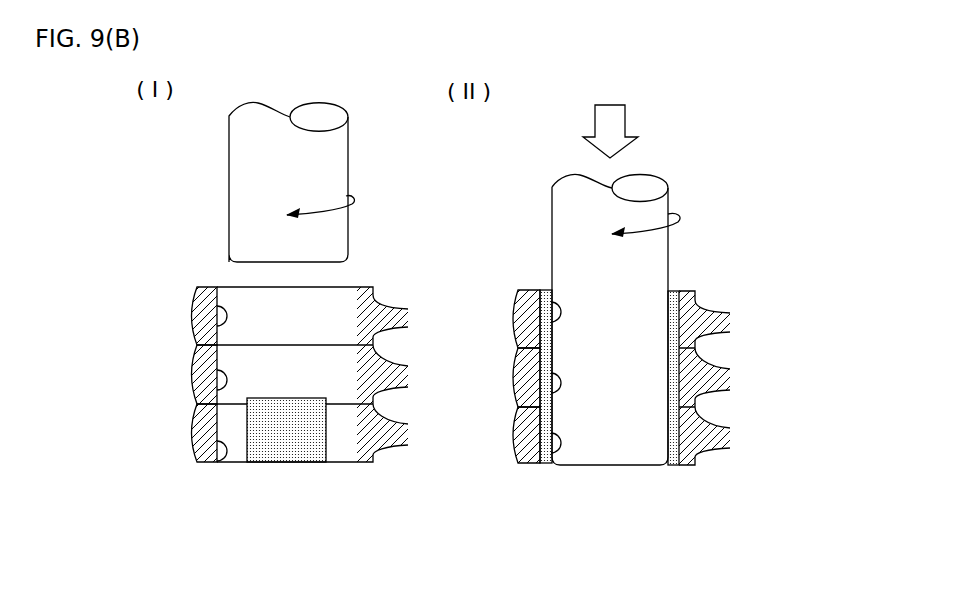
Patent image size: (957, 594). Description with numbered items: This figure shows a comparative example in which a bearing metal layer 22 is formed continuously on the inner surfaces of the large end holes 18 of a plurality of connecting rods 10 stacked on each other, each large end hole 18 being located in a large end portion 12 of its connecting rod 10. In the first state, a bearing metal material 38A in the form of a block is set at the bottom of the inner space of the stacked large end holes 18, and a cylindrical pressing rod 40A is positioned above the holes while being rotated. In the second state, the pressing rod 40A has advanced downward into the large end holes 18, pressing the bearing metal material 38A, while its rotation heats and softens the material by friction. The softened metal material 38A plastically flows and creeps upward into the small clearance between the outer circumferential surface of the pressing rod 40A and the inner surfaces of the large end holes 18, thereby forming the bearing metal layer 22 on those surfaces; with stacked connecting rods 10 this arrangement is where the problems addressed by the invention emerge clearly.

The connecting rod 10 is at (382, 291).
The large end portion 12 is at (189, 297).
The large end hole 18 is at (200, 325).
The bearing metal layer 22 is at (704, 298).
The bearing metal material 38A is at (272, 468).
The cylindrical pressing rod 40A is at (362, 117).